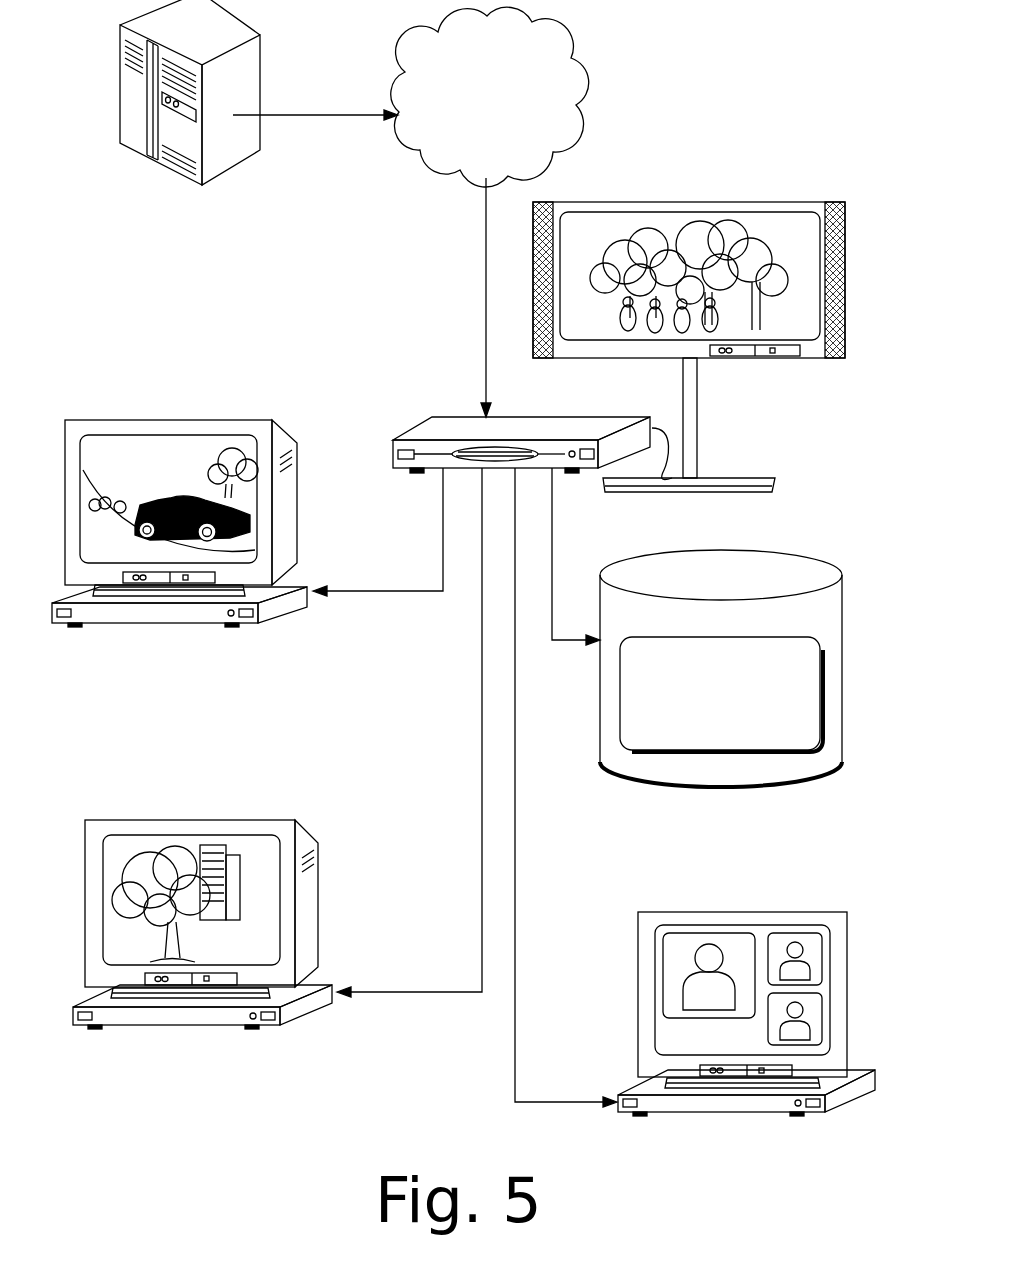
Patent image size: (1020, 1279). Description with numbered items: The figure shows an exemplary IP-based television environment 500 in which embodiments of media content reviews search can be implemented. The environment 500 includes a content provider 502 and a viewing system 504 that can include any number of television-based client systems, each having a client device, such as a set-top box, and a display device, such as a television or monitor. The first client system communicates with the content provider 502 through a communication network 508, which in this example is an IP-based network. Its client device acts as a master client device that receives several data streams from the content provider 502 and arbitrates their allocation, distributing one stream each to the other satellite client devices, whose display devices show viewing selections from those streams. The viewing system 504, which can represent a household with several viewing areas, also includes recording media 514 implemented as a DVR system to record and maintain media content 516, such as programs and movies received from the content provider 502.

The IP-based television (IPTV) environment 500 is at (728, 55).
The content provider 502 is at (190, 124).
The viewing system 504 is at (428, 302).
The communication network 508 is at (490, 97).
The recording media 514 is at (721, 668).
The media content 516 is at (721, 694).